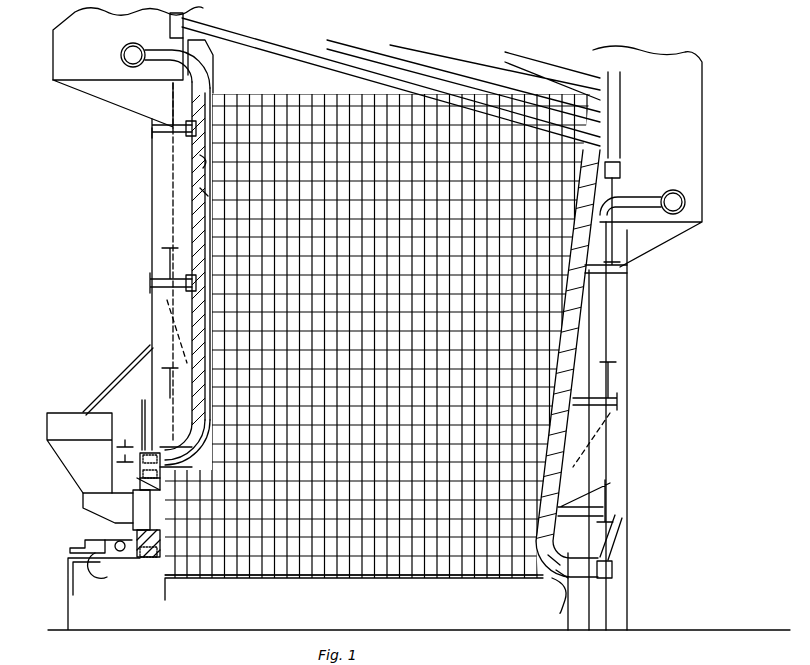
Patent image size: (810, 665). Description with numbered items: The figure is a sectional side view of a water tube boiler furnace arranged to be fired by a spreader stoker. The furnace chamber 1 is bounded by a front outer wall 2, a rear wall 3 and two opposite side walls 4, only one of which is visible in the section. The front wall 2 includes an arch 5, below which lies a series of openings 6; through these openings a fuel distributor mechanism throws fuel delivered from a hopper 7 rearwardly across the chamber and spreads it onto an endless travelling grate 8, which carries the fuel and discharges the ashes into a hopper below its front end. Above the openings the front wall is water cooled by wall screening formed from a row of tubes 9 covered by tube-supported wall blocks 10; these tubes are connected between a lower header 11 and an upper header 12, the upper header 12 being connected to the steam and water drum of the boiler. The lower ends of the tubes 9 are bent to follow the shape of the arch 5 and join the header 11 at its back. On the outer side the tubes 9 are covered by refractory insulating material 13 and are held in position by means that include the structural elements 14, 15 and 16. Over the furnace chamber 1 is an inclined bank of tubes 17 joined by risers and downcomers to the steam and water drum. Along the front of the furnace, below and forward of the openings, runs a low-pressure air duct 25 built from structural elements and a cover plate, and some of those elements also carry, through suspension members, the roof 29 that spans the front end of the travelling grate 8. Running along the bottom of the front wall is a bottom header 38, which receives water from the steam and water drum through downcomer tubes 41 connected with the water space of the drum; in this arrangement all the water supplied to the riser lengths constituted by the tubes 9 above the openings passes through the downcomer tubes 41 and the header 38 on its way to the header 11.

The furnace chamber 1 is at (455, 310).
The front outer wall 2 is at (203, 211).
The rear wall 3 is at (567, 342).
The side wall 4 is at (550, 287).
The arch 5 is at (190, 445).
The opening 6 is at (142, 507).
The hopper 7 is at (137, 480).
The endless travelling grate 8 is at (483, 580).
The tubes 9 is at (207, 197).
The tube-supported wall blocks 10 is at (205, 163).
The lower header 11 is at (135, 468).
The upper header 12 is at (124, 52).
The refractory insulating material 13 is at (193, 223).
The structural element 14 is at (178, 125).
The structural element 15 is at (170, 283).
The structural element 16 is at (170, 400).
The inclined bank of tubes 17 is at (600, 118).
The low-pressure air duct 25 is at (92, 543).
The roof 29 is at (115, 558).
The bottom header 38 is at (143, 557).
The downcomer tubes 41 is at (138, 437).